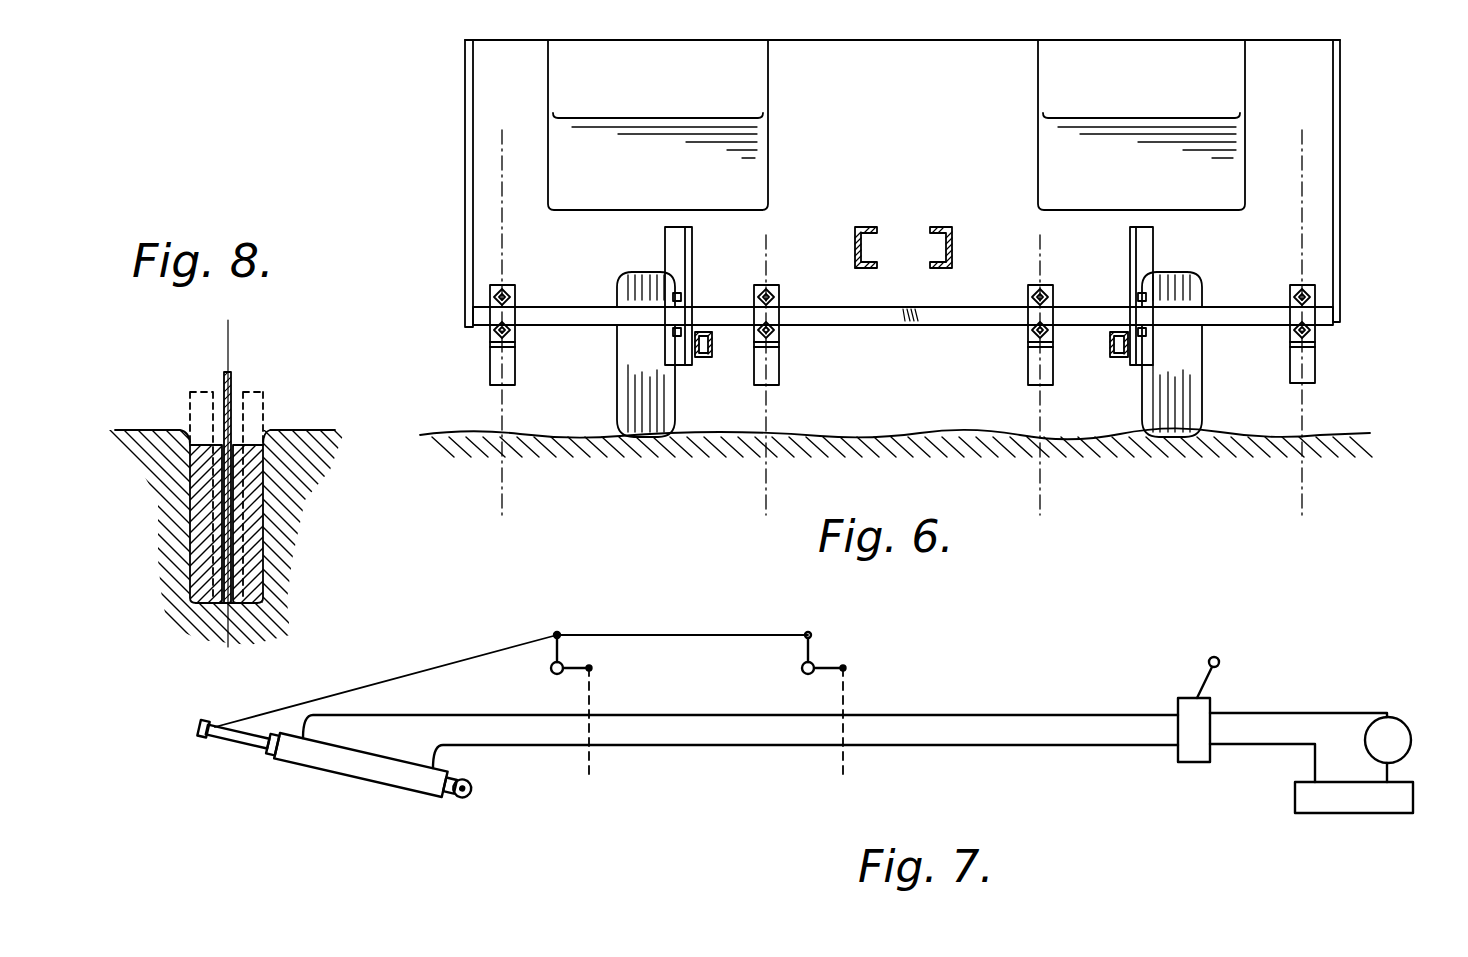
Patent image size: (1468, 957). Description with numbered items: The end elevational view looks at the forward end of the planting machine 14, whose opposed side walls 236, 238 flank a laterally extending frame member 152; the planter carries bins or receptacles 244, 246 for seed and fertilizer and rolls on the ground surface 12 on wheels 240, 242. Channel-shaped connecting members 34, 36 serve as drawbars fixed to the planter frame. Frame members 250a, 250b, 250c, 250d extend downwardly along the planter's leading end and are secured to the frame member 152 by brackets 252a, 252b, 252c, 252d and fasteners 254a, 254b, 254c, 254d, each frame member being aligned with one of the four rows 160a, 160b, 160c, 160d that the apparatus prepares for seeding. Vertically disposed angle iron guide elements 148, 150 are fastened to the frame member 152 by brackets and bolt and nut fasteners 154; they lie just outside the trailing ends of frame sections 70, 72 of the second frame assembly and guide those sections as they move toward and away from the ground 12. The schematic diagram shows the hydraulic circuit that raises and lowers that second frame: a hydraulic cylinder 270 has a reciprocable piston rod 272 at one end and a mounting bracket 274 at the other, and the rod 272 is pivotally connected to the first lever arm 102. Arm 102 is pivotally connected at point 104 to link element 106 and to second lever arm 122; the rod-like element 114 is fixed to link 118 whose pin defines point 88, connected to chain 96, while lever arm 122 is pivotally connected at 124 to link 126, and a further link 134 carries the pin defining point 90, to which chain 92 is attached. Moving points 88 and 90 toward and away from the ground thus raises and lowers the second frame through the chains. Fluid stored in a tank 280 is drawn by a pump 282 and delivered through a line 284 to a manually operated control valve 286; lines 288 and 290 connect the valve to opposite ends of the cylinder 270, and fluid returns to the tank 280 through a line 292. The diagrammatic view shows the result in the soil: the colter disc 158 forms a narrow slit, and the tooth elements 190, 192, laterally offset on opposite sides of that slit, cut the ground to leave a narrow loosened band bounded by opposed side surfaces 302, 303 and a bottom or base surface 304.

In FIG. 6, the planting machine 14 is at (929, 29).
In FIG. 6, the side wall 236 is at (465, 216).
In FIG. 6, the side wall 238 is at (1340, 218).
In FIG. 6, the bin 244 is at (643, 48).
In FIG. 6, the bin 246 is at (1168, 48).
In FIG. 6, the frame member 152 is at (884, 313).
In FIG. 6, the connecting member 34 is at (866, 227).
In FIG. 6, the connecting member 36 is at (940, 227).
In FIG. 6, the frame member 250a is at (495, 356).
In FIG. 6, the frame member 250b is at (778, 370).
In FIG. 6, the frame member 250c is at (1033, 353).
In FIG. 6, the frame member 250d is at (1312, 361).
In FIG. 6, the bracket 252a is at (498, 320).
In FIG. 6, the bracket 252b is at (776, 288).
In FIG. 6, the bracket 252c is at (1034, 310).
In FIG. 6, the bracket 252d is at (1308, 306).
In FIG. 6, the fastener 254a is at (506, 293).
In FIG. 6, the fastener 254b is at (774, 331).
In FIG. 6, the fastener 254c is at (1039, 297).
In FIG. 6, the fastener 254d is at (1310, 327).
In FIG. 6, the wheel 240 is at (615, 400).
In FIG. 6, the wheel 242 is at (1202, 388).
In FIG. 6, the guide element 148 is at (665, 235).
In FIG. 6, the guide element 150 is at (1153, 234).
In FIG. 6, the bolt and nut fastener 154 is at (673, 332).
In FIG. 6, the frame section 70 is at (704, 357).
In FIG. 6, the frame section 72 is at (1115, 357).
In FIG. 6, the ground surface 12 is at (1340, 430).
In FIG. 8, the ground surface 12 is at (318, 430).
In FIG. 6, the row 160a is at (502, 487).
In FIG. 6, the row 160b is at (766, 487).
In FIG. 6, the row 160c is at (1040, 487).
In FIG. 6, the row 160d is at (1302, 487).
In FIG. 8, the colter disc 158 is at (233, 344).
In FIG. 8, the tooth element 190 is at (300, 382).
In FIG. 8, the tooth element 192 is at (190, 392).
In FIG. 8, the side surface 302 is at (258, 527).
In FIG. 8, the side surface 303 is at (195, 527).
In FIG. 8, the furrow bottom 304 is at (195, 598).
In FIG. 7, the first lever arm 102 is at (392, 676).
In FIG. 7, the pivotal connection 104 is at (557, 632).
In FIG. 7, the link element 106 is at (554, 654).
In FIG. 7, the rod-like element 114 is at (562, 671).
In FIG. 7, the link element 118 is at (595, 666).
In FIG. 7, the point 88 is at (594, 671).
In FIG. 7, the chain 96 is at (594, 770).
In FIG. 7, the second lever arm 122 is at (708, 636).
In FIG. 7, the pivotal connection 124 is at (833, 604).
In FIG. 7, the link element 126 is at (815, 656).
In FIG. 7, the link element 134 is at (823, 669).
In FIG. 7, the point 90 is at (846, 670).
In FIG. 7, the chain 92 is at (848, 770).
In FIG. 7, the hydraulic cylinder 270 is at (343, 782).
In FIG. 7, the piston rod 272 is at (235, 737).
In FIG. 7, the mounting bracket 274 is at (463, 788).
In FIG. 7, the line 288 is at (1080, 692).
In FIG. 7, the line 290 is at (992, 747).
In FIG. 7, the fluid control valve 286 is at (1167, 698).
In FIG. 7, the line 284 is at (1331, 702).
In FIG. 7, the pump 282 is at (1412, 728).
In FIG. 7, the line 292 is at (1252, 747).
In FIG. 7, the reservoir 280 is at (1353, 808).